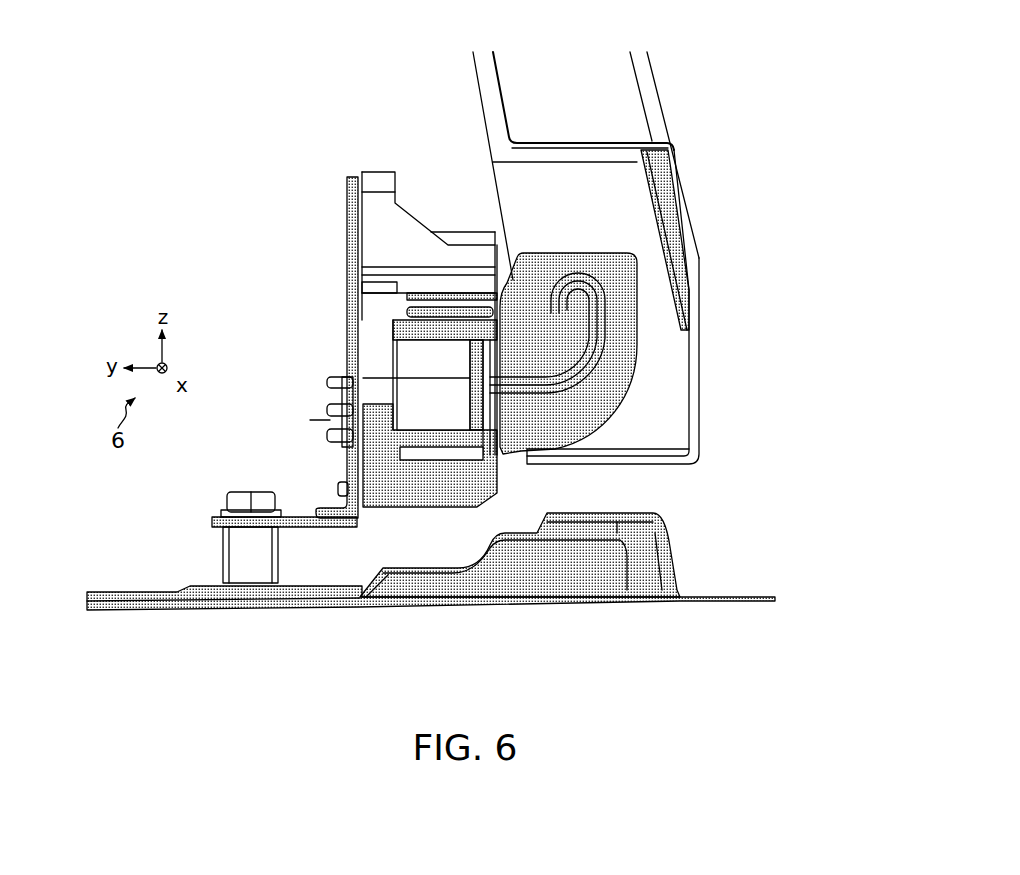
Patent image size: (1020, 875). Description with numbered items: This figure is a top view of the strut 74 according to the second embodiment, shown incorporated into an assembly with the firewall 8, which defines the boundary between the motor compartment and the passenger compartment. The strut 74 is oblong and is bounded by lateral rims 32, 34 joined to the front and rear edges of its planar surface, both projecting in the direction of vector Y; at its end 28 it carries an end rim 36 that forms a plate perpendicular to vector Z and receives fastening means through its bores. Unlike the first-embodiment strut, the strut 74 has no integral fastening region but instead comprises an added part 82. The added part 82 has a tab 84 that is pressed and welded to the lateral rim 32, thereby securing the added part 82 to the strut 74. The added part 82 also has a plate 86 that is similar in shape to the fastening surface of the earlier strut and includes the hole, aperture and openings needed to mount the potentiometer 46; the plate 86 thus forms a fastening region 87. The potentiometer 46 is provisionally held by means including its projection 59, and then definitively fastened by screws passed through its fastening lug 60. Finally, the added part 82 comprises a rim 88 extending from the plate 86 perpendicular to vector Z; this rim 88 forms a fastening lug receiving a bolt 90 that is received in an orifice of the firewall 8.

The firewall 8 is at (566, 598).
The end 28 is at (642, 466).
The lateral rim 32 is at (503, 193).
The lateral rim 34 is at (576, 66).
The end rim 36 is at (657, 326).
The potentiometer 46 is at (420, 507).
The projection 59 is at (339, 490).
The fastening lug 60 is at (381, 172).
The strut 74 is at (662, 103).
The added part 82 is at (641, 357).
The tab 84 is at (607, 291).
The plate 86 is at (311, 347).
The fastening region 87 is at (347, 236).
The rim 88 is at (313, 528).
The bolt 90 is at (228, 504).